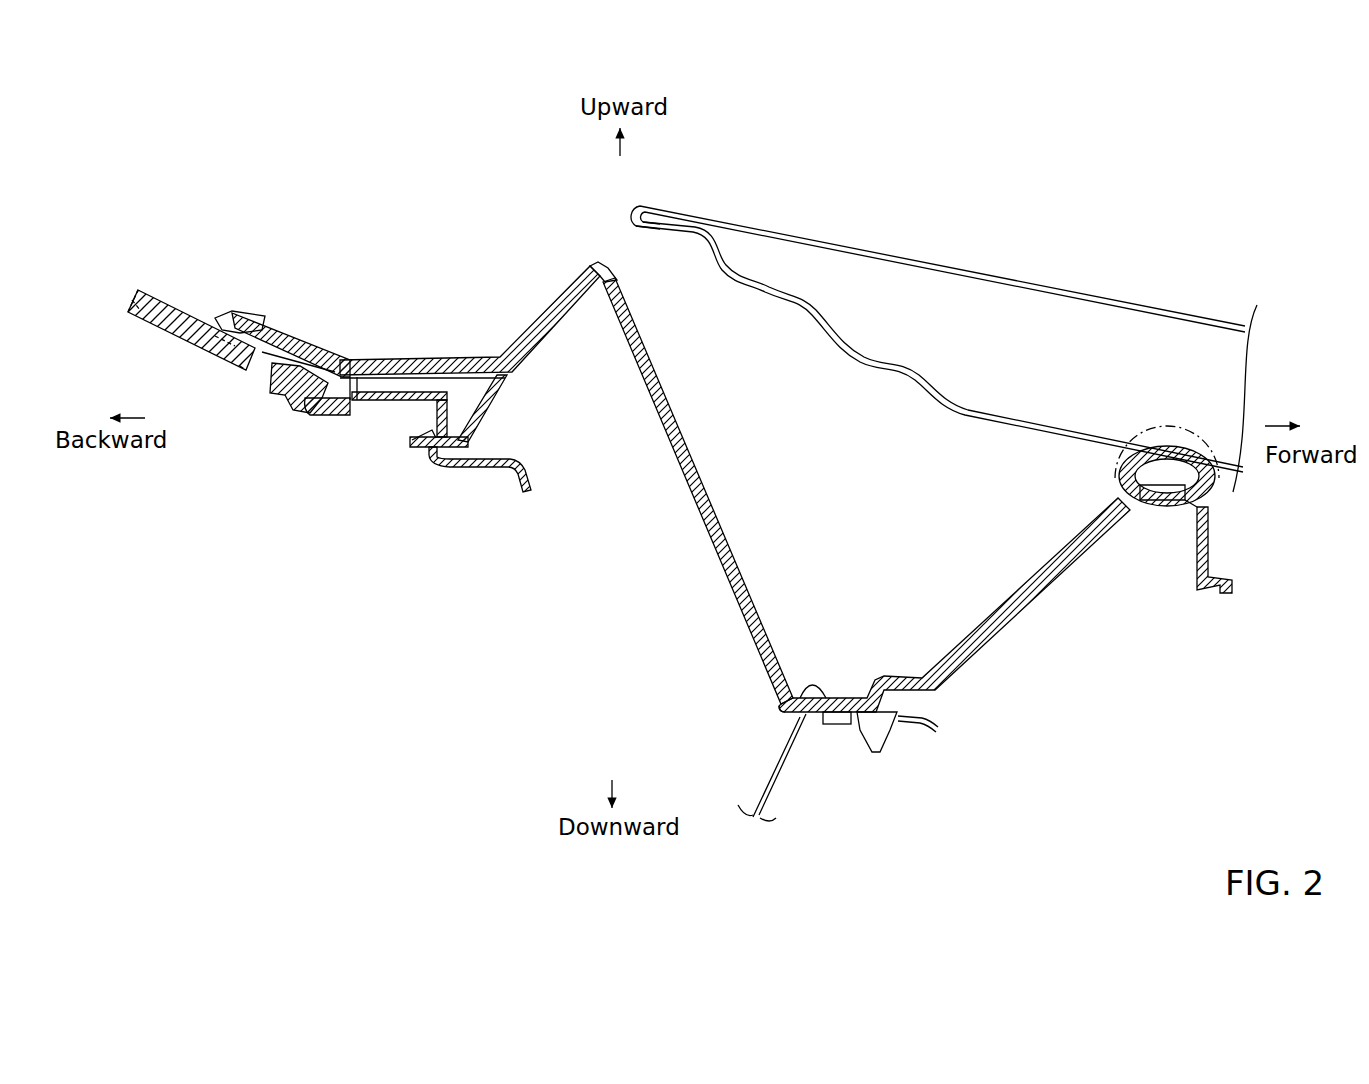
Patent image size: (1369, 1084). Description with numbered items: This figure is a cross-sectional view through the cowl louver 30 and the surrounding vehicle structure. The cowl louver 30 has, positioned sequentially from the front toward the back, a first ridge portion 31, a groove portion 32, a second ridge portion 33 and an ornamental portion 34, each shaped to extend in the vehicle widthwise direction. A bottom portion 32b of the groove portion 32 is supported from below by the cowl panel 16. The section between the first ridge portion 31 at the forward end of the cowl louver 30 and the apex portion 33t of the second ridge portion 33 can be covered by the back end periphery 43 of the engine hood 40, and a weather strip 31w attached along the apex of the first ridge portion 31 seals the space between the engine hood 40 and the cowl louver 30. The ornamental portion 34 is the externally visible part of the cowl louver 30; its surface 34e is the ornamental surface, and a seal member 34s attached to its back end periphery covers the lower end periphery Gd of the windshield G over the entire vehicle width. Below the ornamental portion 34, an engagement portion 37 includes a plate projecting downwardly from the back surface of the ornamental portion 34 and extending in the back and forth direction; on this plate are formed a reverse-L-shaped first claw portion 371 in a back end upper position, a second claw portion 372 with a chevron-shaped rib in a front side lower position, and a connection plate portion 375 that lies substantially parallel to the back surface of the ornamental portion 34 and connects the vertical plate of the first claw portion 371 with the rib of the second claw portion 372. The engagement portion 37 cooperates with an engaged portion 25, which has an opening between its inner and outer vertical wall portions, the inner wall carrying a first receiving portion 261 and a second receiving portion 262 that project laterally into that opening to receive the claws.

The cowl louver 30 is at (722, 466).
The second ridge portion 33 is at (666, 437).
The apex portion 33t is at (610, 274).
The ornamental portion 34 is at (406, 325).
The seal member 34s is at (212, 315).
The ornamental surface 34e is at (420, 363).
The connection plate portion 375 is at (453, 387).
The engagement portion 37 is at (437, 410).
The first claw portion 371 is at (337, 418).
The second receiving portion 262 is at (423, 418).
The second claw portion 372 is at (428, 447).
The first receiving portion 261 is at (290, 410).
The engaged portion 25 is at (488, 472).
The windshield G is at (191, 340).
The lower end periphery Gd is at (235, 372).
The back end periphery 43 is at (786, 240).
The engine hood 40 is at (944, 326).
The weather strip 31w is at (1123, 455).
The first ridge portion 31 is at (1190, 520).
The groove portion 32 is at (916, 629).
The bottom portion 32b is at (788, 714).
The cowl panel 16 is at (774, 773).